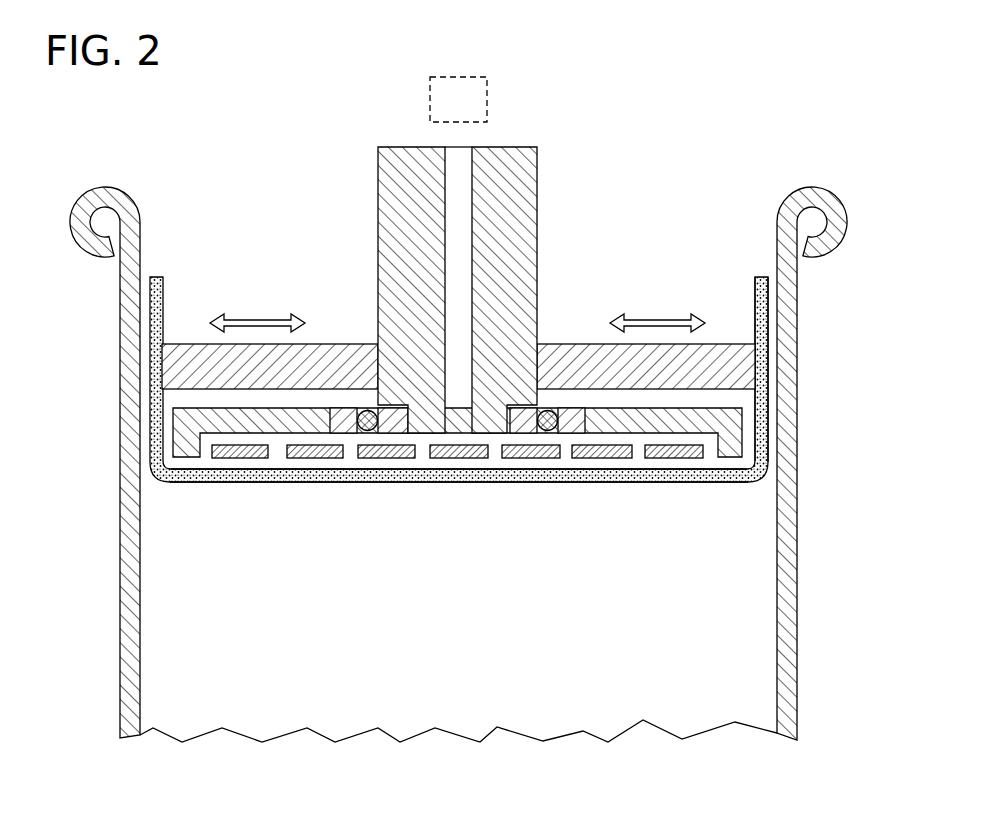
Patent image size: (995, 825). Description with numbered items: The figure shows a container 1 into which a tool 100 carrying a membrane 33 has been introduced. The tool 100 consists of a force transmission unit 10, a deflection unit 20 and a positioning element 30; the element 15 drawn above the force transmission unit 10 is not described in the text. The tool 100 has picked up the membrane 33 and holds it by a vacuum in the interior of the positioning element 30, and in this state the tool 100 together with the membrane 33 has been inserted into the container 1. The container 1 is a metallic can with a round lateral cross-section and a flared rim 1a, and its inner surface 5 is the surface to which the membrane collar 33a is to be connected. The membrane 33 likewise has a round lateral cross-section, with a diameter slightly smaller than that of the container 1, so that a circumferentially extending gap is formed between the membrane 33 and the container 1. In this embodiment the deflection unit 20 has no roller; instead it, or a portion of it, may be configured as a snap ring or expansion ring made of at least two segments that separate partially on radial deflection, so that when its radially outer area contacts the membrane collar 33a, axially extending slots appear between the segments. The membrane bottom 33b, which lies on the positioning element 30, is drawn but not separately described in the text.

The tool 100 is at (308, 153).
The container 1 is at (129, 398).
The flared rim 1a is at (97, 189).
The inner surface 5 is at (769, 584).
The force transmission unit 10 is at (548, 192).
The knob 15 is at (474, 116).
The deflection unit 20 is at (592, 335).
The positioning element 30 is at (755, 444).
The membrane 33 is at (512, 391).
The membrane collar 33a is at (762, 400).
The tray bottom 33b is at (455, 484).